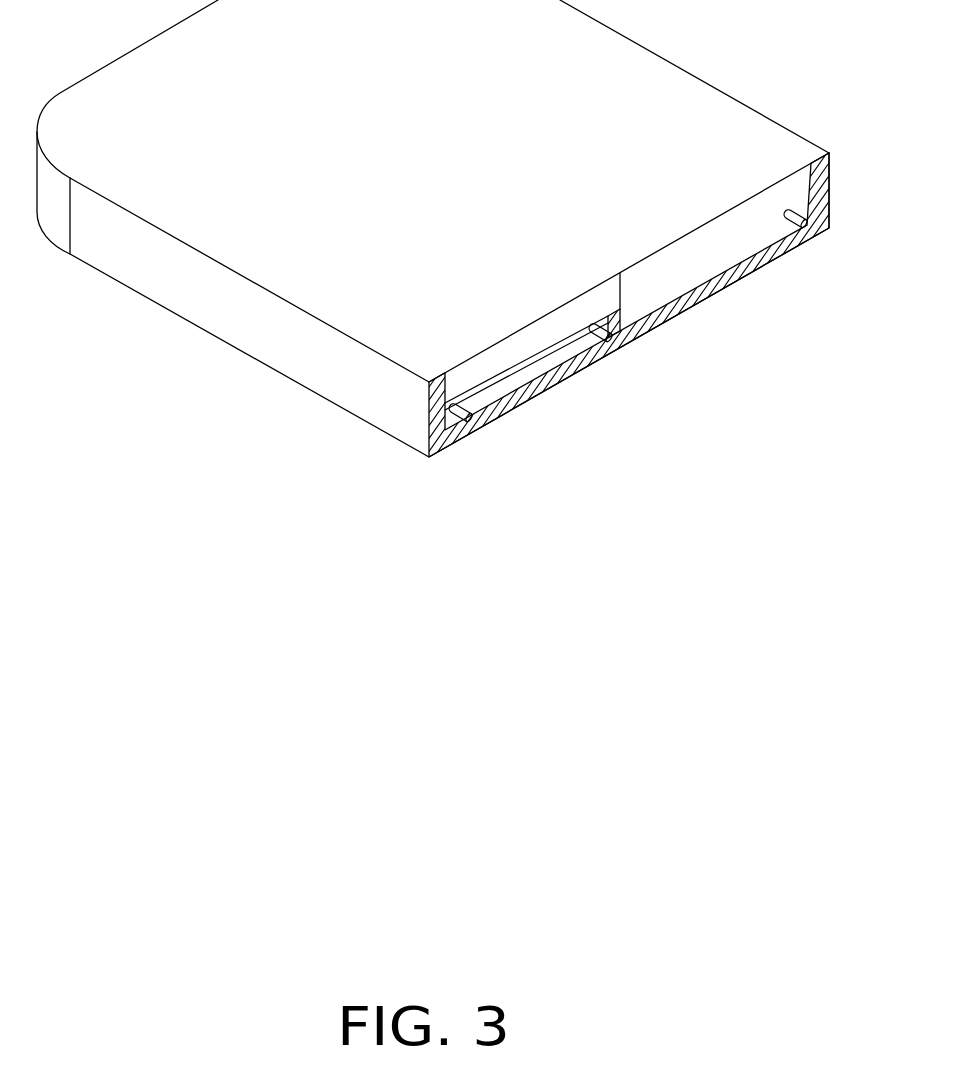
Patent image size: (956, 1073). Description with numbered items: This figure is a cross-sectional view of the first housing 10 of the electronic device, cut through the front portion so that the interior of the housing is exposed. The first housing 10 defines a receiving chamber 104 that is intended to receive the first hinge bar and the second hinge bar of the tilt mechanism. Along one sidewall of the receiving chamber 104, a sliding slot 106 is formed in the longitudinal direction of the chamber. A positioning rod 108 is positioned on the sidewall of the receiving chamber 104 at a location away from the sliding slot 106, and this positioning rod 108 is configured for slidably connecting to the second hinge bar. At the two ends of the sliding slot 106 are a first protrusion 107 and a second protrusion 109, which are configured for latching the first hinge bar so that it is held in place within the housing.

The first housing 10 is at (435, 420).
The receiving chamber 104 is at (662, 278).
The sliding slot 106 is at (535, 375).
The first protrusion 107 is at (470, 418).
The positioning rod 108 is at (811, 232).
The second protrusion 109 is at (613, 340).